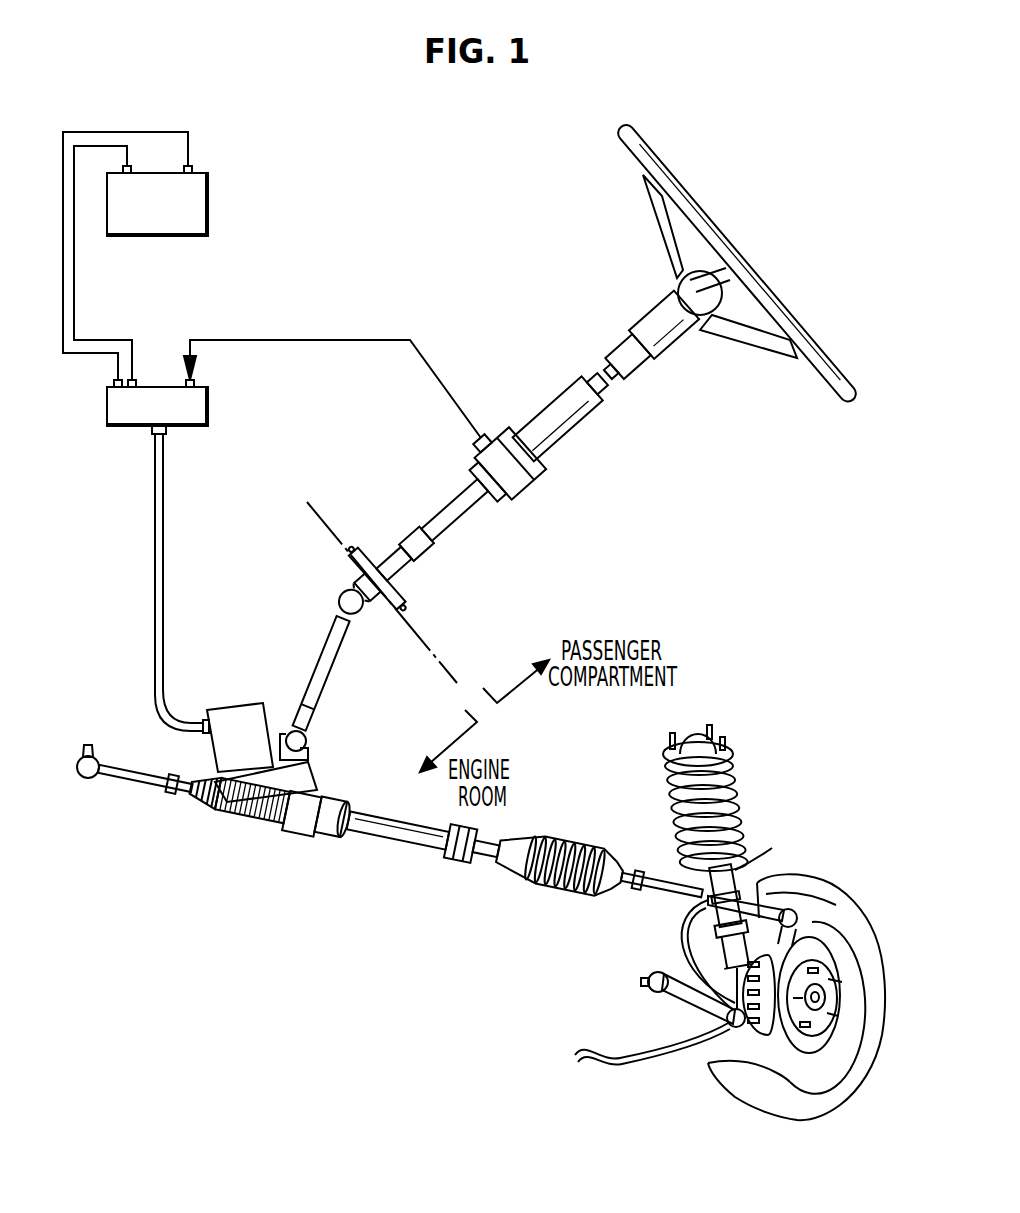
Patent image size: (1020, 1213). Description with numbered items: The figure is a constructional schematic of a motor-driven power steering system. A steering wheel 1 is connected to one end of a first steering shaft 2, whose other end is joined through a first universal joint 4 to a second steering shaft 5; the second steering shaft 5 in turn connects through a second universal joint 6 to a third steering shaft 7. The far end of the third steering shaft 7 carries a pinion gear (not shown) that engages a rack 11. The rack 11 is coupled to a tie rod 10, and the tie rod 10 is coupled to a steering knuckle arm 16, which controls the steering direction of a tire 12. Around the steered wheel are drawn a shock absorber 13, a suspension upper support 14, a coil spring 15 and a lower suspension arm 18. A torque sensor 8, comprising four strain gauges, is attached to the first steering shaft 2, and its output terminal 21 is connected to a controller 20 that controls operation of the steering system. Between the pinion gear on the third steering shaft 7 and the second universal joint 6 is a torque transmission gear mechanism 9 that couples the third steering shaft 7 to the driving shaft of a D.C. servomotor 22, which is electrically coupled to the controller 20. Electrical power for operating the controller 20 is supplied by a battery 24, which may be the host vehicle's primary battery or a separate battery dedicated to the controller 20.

The steering wheel 1 is at (712, 218).
The first steering shaft 2 is at (563, 414).
The first universal joint 4 is at (351, 601).
The second steering shaft 5 is at (323, 655).
The second universal joint 6 is at (311, 746).
The third steering shaft 7 is at (298, 837).
The torque sensor 8 is at (506, 467).
The torque transmission gear mechanism 9 is at (212, 777).
The tie rod 10 is at (133, 785).
The rack 11 is at (262, 827).
The tire 12 is at (812, 1100).
The shock absorber 13 is at (733, 885).
The suspension upper support 14 is at (730, 748).
The coil spring 15 is at (742, 800).
The steering knuckle arm 16 is at (795, 910).
The lower suspension arm 18 is at (678, 995).
The controller 20 is at (210, 405).
The output terminal 21 is at (482, 443).
The D.C. servomotor 22 is at (240, 716).
The battery 24 is at (203, 205).